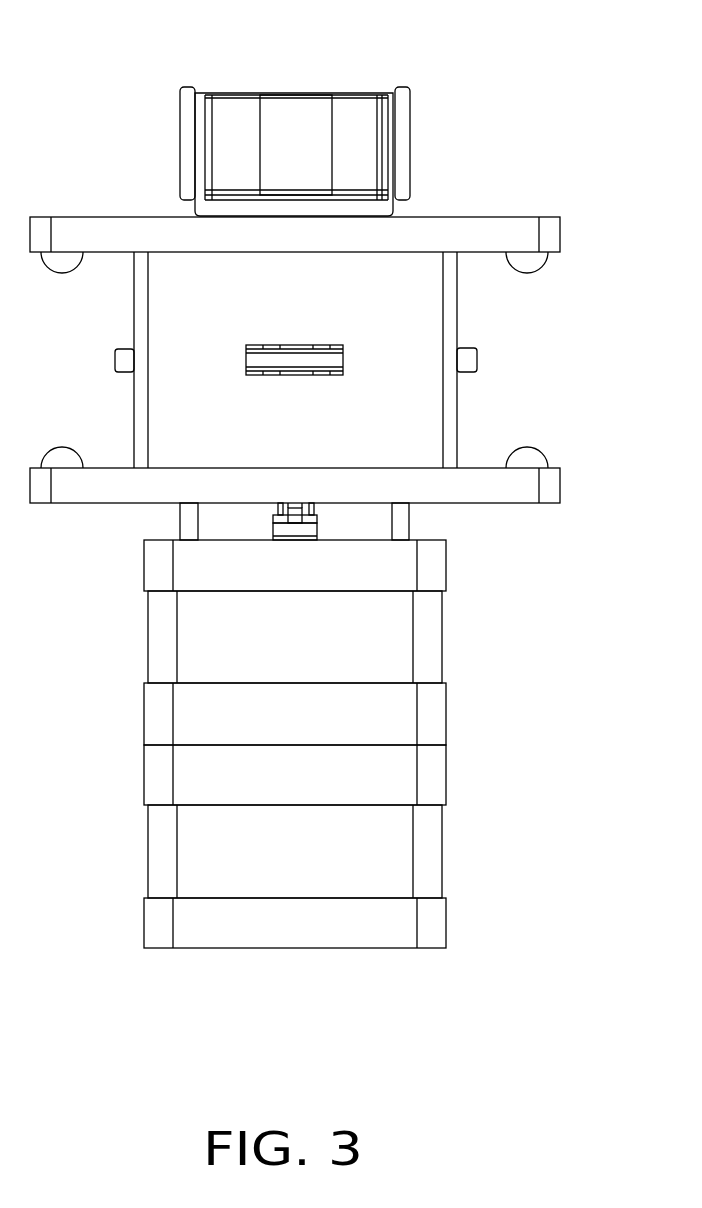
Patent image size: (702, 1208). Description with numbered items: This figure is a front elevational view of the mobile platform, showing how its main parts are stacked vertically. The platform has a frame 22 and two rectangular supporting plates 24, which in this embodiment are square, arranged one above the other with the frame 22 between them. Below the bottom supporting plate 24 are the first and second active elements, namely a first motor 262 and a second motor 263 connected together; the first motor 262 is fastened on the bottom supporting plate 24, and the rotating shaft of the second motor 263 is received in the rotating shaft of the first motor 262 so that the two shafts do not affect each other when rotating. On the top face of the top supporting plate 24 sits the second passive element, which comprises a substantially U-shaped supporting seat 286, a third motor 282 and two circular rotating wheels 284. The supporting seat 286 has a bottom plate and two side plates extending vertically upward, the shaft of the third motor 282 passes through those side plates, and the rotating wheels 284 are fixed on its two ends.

The frame 22 is at (398, 340).
The supporting plate 24 is at (513, 230).
The first motor 262 is at (427, 652).
The second motor 263 is at (432, 853).
The third motor 282 is at (305, 130).
The rotating wheel 284 is at (187, 105).
The supporting seat 286 is at (380, 204).